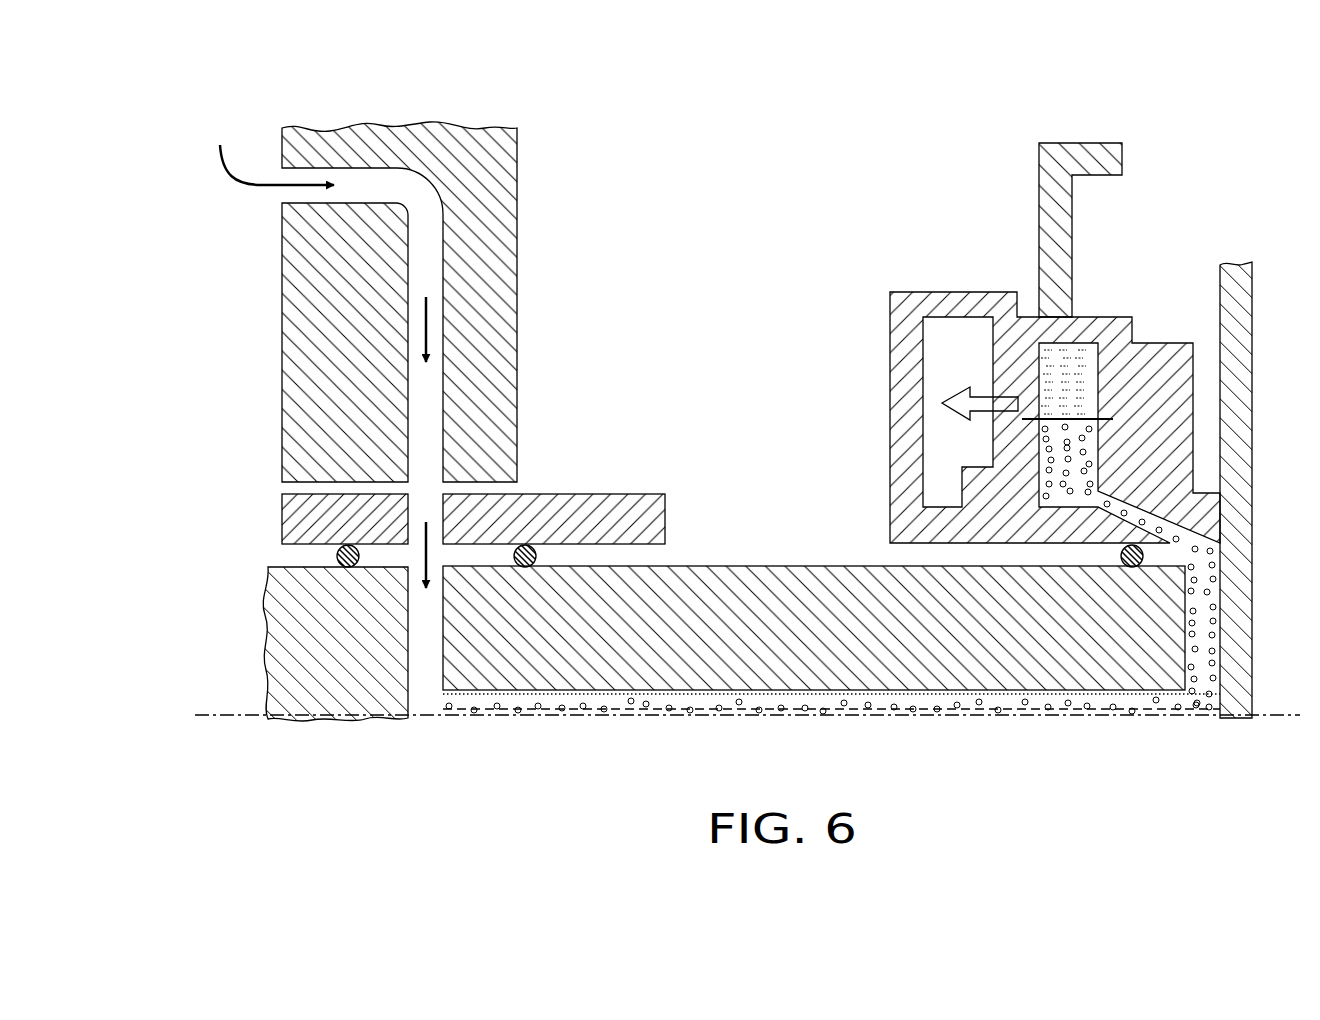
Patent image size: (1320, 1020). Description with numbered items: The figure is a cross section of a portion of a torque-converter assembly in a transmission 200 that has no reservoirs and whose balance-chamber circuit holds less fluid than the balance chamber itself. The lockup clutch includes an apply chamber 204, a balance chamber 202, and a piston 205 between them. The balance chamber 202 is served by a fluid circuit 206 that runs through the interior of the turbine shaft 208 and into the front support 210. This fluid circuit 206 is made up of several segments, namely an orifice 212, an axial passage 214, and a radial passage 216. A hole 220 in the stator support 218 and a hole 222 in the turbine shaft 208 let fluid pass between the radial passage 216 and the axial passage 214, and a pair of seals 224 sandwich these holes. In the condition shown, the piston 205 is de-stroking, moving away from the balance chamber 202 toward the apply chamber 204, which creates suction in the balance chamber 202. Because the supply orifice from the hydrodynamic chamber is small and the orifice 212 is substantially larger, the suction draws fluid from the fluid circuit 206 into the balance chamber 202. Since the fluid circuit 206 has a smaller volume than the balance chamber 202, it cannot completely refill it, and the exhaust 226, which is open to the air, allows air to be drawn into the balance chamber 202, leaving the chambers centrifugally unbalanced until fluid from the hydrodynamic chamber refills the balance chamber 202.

The transmission 200 is at (860, 128).
The balance chamber 202 is at (1072, 368).
The apply chamber 204 is at (955, 335).
The piston 205 is at (1077, 142).
The fluid circuit 206 is at (963, 710).
The turbine shaft 208 is at (805, 566).
The front support 210 is at (413, 125).
The orifice 212 is at (1165, 516).
The axial passage 214 is at (654, 702).
The radial passage 216 is at (440, 283).
The stator support 218 is at (590, 493).
The hole 220 is at (413, 515).
The hole 222 is at (443, 645).
The seals 224 is at (330, 558).
The exhaust 226 is at (281, 171).